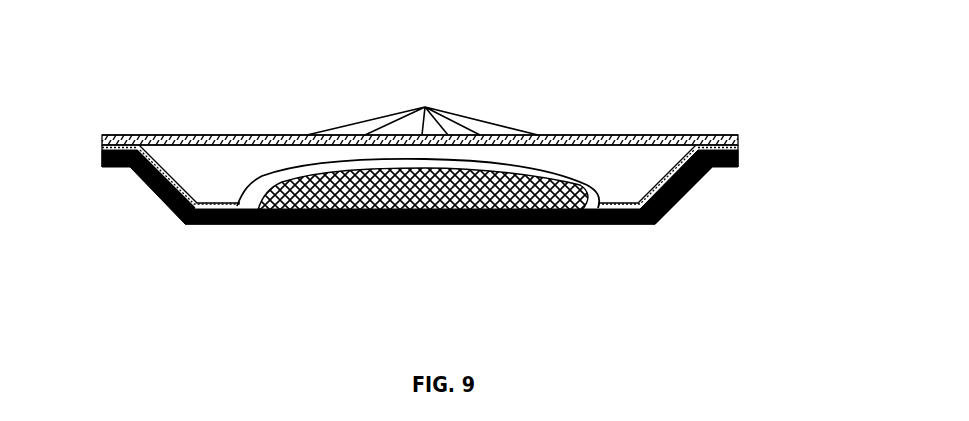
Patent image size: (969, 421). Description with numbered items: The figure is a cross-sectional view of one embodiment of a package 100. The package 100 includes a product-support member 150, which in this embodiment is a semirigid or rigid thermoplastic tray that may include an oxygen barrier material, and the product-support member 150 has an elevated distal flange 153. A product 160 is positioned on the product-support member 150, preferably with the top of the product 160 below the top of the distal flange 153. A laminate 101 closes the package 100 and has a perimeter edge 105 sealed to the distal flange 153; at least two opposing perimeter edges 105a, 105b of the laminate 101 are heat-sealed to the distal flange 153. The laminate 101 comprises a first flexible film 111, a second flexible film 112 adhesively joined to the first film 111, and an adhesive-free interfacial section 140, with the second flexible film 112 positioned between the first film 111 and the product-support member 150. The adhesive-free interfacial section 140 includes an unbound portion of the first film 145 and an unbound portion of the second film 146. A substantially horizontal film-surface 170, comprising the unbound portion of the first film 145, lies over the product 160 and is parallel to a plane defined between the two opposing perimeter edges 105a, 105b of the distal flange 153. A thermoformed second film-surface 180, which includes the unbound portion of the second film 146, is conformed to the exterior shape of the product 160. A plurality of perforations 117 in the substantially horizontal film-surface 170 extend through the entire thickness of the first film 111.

The package 100 is at (347, 68).
The laminate 101 is at (128, 135).
The perimeter edge 105 is at (738, 135).
The opposing perimeter edge 105a is at (103, 168).
The opposing perimeter edge 105b is at (738, 143).
The first flexible film 111 is at (613, 135).
The second flexible film 112 is at (623, 203).
The perforations 117 is at (422, 103).
The adhesive-free interfacial section 140 is at (207, 175).
The unbound portion of the first film 145 is at (208, 135).
The unbound portion of the second film 146 is at (213, 225).
The product-support member 150 is at (608, 222).
The distal flange 153 is at (720, 170).
The product 160 is at (455, 198).
The substantially horizontal film-surface 170 is at (253, 135).
The thermoformed second film-surface 180 is at (658, 218).